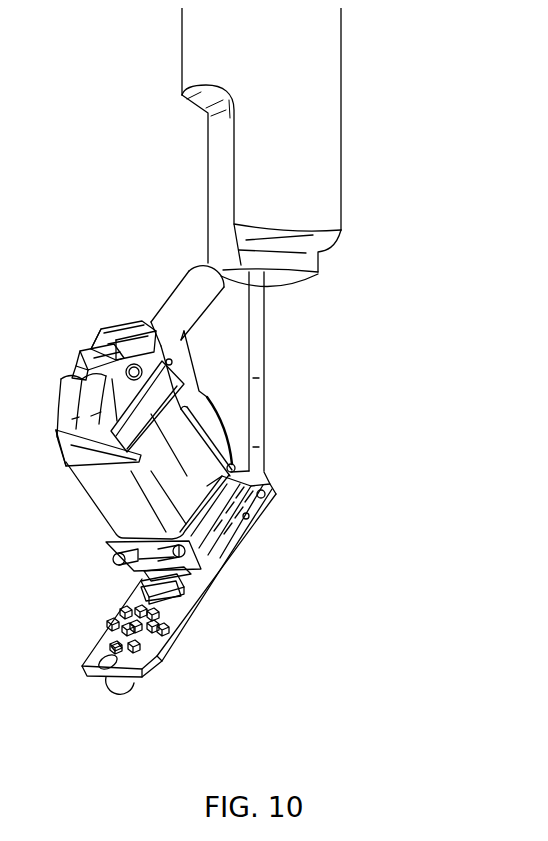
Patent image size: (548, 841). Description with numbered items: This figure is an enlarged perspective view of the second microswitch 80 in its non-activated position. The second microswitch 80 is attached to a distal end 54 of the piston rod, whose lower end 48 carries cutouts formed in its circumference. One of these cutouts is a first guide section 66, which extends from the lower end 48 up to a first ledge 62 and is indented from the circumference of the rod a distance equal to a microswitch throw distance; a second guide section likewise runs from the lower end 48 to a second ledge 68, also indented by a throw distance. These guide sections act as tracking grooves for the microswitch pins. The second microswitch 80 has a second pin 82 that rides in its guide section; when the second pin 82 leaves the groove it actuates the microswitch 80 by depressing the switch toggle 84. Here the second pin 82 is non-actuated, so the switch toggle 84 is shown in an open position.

The lower end 48 is at (308, 265).
The distal end 54 is at (258, 382).
The first ledge 62 is at (251, 215).
The first guide section 66 is at (311, 234).
The second ledge 68 is at (191, 88).
The second microswitch 80 is at (85, 499).
The second pin 82 is at (163, 282).
The switch toggle 84 is at (165, 352).